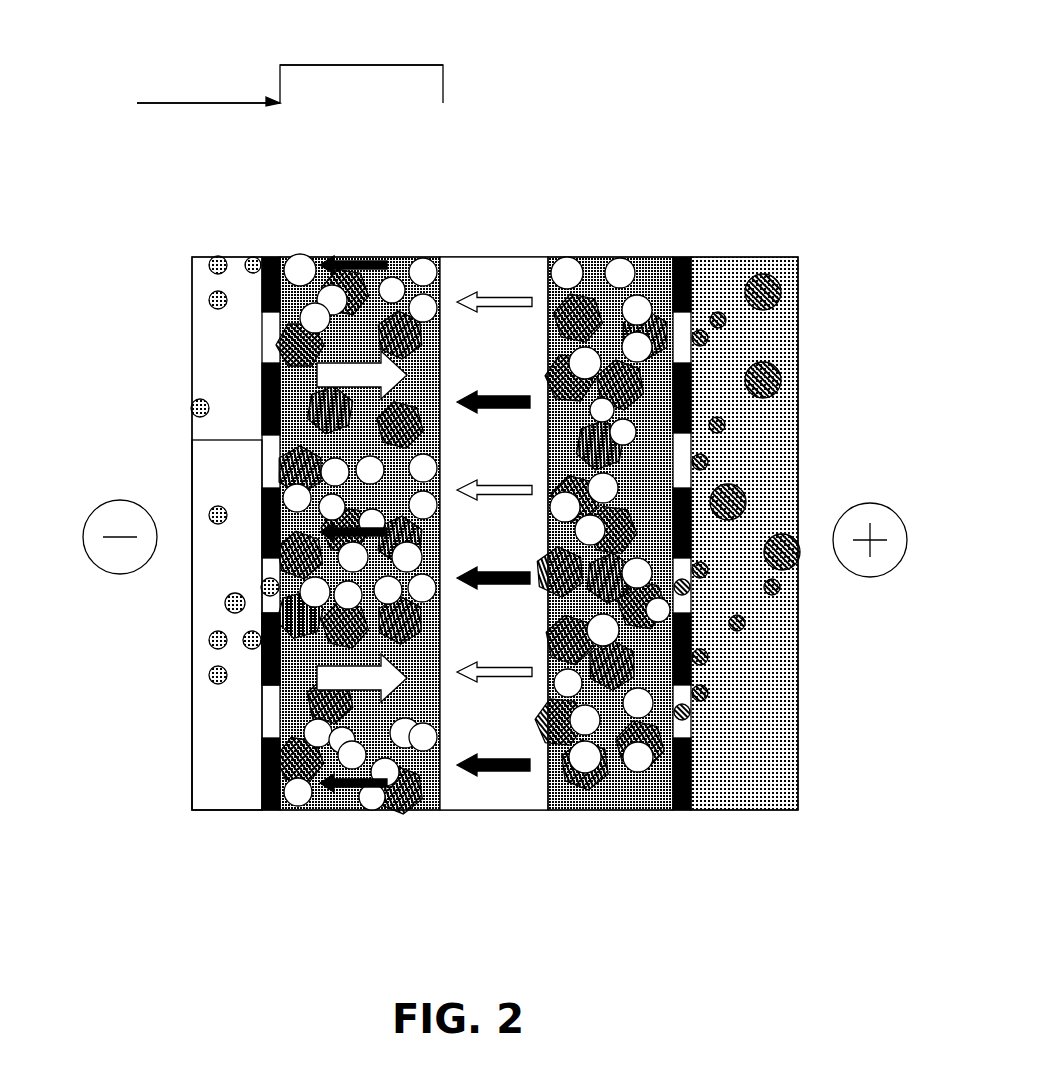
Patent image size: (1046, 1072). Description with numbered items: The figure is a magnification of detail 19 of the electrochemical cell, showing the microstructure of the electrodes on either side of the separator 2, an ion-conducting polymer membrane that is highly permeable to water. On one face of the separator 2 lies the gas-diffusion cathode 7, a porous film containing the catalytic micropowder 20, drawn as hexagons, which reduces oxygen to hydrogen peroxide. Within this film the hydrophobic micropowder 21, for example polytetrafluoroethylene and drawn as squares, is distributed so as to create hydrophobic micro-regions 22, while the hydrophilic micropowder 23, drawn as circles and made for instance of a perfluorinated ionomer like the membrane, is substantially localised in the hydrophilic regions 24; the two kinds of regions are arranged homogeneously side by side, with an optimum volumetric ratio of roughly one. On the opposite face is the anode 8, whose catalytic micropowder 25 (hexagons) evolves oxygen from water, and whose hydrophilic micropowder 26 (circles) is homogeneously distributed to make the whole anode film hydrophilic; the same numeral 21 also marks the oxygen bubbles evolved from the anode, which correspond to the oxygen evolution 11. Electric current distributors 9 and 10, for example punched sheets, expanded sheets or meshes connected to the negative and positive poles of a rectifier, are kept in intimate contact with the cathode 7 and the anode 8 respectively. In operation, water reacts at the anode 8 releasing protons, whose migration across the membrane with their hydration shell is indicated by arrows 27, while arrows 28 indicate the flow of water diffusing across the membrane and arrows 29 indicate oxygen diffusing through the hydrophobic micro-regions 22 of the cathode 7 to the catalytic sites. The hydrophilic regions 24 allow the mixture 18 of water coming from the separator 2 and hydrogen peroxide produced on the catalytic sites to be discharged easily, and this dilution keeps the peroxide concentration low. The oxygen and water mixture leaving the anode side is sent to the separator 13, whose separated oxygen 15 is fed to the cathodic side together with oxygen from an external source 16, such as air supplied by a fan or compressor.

The separator 2 is at (483, 467).
The gas-diffusion cathode 7 is at (249, 513).
The anode 8 is at (703, 466).
The electric current distributor 9 is at (258, 687).
The electric current distributor 10 is at (693, 272).
The oxygen evolution 11 is at (782, 380).
The separator 13 is at (542, 102).
The separated oxygen 15 is at (443, 83).
The external oxygen source 16 is at (228, 102).
The mixture of water and hydrogen peroxide 18 is at (227, 613).
The detail 19 is at (759, 579).
The catalytic micropowder for oxygen reduction 20 is at (300, 348).
The hydrophobic micropowder 21 is at (337, 323).
The hydrophobic micro-regions 22 is at (243, 382).
The hydrophilic micropowder 23 is at (297, 273).
The hydrophilic regions 24 is at (243, 525).
The catalytic micropowder for oxygen evolution 25 is at (638, 667).
The hydrophilic micropowder 26 is at (638, 703).
The arrows indicating hydrated proton migration 27 is at (474, 292).
The arrows indicating water flow 28 is at (353, 790).
The arrows indicating oxygen diffusion 29 is at (333, 686).